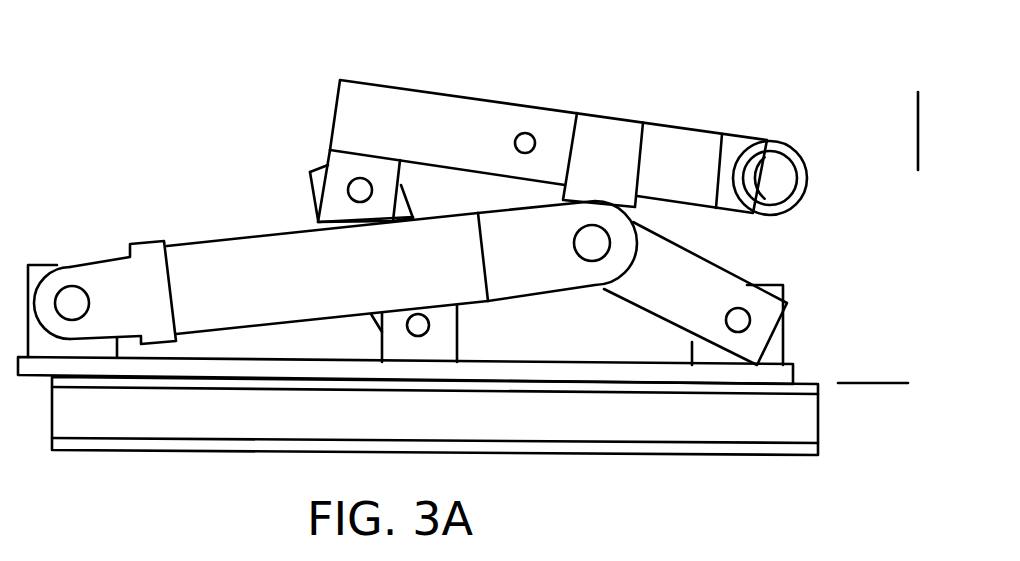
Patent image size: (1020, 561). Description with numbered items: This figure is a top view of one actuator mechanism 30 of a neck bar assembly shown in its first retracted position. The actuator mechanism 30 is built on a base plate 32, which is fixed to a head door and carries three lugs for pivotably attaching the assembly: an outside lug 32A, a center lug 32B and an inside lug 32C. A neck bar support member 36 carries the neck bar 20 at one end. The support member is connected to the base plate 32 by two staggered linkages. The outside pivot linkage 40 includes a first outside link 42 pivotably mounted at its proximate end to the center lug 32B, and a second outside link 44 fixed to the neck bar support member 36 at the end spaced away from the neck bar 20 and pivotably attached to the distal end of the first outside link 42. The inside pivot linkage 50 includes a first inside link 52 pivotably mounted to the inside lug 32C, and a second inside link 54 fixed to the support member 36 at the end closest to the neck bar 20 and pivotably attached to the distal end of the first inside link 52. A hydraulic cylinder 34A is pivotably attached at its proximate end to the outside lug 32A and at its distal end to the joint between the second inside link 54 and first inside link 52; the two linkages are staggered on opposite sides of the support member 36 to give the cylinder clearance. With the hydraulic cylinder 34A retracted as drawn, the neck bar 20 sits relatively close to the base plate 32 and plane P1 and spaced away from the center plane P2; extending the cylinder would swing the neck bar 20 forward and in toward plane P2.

The neck bar 20 is at (805, 160).
The actuator mechanism 30 is at (393, 57).
The base plate 32 is at (212, 367).
The outside lug 32A is at (42, 270).
The center lug 32B is at (440, 343).
The inside lug 32C is at (777, 348).
The hydraulic cylinder 34A is at (330, 292).
The neck bar support member 36 is at (470, 144).
The outside pivot linkage 40 is at (290, 150).
The first outside link 42 is at (402, 205).
The second outside link 44 is at (320, 217).
The inside pivot linkage 50 is at (697, 238).
The first inside link 52 is at (692, 300).
The second inside link 54 is at (625, 175).
The plane P1 is at (877, 385).
The center plane P2 is at (913, 102).